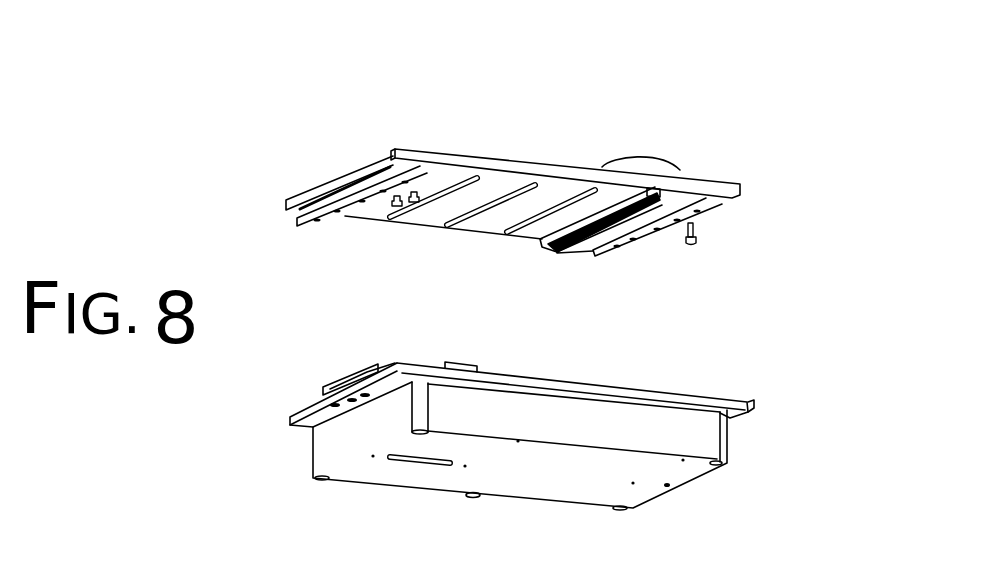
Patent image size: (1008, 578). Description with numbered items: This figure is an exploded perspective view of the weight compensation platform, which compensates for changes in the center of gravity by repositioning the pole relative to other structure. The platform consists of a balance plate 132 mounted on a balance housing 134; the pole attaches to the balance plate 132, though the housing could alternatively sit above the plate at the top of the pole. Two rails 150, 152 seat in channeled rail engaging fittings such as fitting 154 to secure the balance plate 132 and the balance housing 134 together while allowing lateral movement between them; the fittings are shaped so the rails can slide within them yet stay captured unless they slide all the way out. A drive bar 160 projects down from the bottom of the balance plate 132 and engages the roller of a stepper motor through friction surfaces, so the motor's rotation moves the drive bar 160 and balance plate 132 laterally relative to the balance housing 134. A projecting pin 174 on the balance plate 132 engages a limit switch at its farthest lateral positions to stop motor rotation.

The balance plate 132 is at (740, 185).
The balance housing 134 is at (735, 397).
The rail 150 is at (299, 223).
The rail 152 is at (705, 185).
The rail engaging fitting 154 is at (361, 363).
The drive bar 160 is at (612, 208).
The projecting pin 174 is at (423, 192).